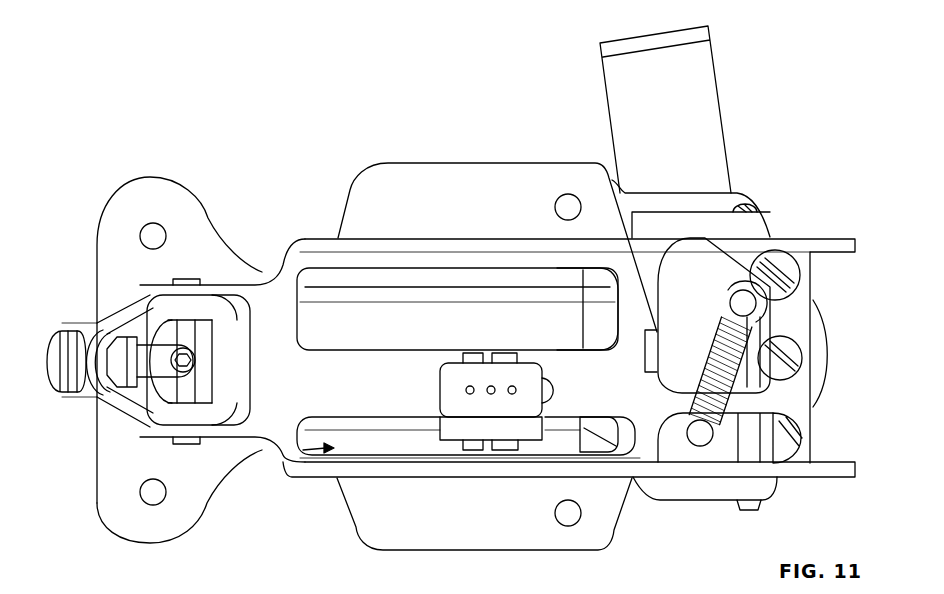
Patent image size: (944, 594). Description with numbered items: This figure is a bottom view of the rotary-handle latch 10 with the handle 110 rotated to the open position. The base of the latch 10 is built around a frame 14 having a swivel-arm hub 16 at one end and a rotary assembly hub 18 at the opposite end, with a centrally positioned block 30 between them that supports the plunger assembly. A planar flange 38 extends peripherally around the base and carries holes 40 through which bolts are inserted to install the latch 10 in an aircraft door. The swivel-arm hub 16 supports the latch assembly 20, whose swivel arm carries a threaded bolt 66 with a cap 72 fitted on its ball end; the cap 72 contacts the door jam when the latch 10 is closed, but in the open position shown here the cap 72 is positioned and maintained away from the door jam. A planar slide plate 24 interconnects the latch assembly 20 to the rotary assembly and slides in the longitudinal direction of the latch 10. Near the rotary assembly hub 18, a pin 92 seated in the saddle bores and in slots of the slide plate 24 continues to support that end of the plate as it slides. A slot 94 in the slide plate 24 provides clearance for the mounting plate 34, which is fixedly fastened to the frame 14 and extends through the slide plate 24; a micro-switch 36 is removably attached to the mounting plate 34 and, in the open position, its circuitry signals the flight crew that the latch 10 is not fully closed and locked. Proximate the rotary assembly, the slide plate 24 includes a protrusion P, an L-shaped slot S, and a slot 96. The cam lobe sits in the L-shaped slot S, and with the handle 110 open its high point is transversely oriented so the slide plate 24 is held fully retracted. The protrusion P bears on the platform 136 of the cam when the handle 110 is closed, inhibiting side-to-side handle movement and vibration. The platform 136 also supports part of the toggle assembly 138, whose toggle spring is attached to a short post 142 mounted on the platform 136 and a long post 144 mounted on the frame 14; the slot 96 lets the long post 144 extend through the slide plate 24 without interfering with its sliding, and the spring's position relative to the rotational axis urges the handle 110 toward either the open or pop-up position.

The latch 10 is at (98, 112).
The frame 14 is at (348, 293).
The swivel-arm hub 16 is at (163, 320).
The rotary assembly hub 18 is at (814, 330).
The latch assembly 20 is at (86, 440).
The slide plate 24 is at (290, 244).
The block 30 is at (562, 347).
The mounting plate 34 is at (442, 424).
The micro-switch 36 is at (450, 391).
The flange 38 is at (138, 176).
The holes 40 is at (167, 243).
The bolt 66 is at (130, 400).
The cap 72 is at (66, 335).
The pin 92 is at (800, 410).
The slot 94 is at (290, 455).
The slot 96 is at (778, 495).
The handle 110 is at (706, 63).
The platform 136 is at (683, 265).
The toggle assembly 138 is at (676, 448).
The short post 142 is at (748, 290).
The long post 144 is at (729, 448).
The protrusion P is at (596, 163).
The L-shaped slot S is at (706, 258).